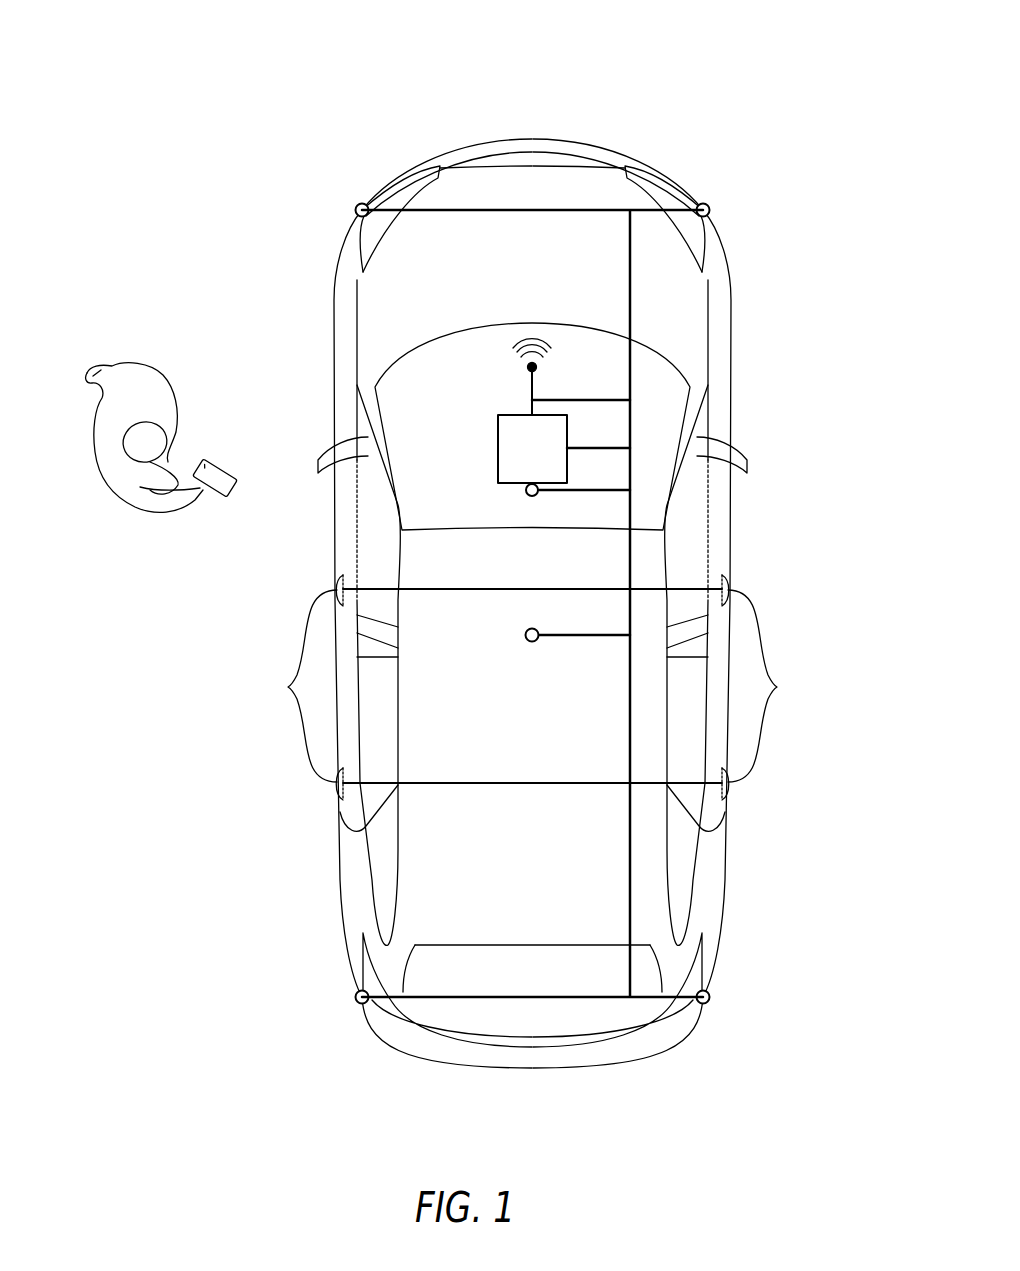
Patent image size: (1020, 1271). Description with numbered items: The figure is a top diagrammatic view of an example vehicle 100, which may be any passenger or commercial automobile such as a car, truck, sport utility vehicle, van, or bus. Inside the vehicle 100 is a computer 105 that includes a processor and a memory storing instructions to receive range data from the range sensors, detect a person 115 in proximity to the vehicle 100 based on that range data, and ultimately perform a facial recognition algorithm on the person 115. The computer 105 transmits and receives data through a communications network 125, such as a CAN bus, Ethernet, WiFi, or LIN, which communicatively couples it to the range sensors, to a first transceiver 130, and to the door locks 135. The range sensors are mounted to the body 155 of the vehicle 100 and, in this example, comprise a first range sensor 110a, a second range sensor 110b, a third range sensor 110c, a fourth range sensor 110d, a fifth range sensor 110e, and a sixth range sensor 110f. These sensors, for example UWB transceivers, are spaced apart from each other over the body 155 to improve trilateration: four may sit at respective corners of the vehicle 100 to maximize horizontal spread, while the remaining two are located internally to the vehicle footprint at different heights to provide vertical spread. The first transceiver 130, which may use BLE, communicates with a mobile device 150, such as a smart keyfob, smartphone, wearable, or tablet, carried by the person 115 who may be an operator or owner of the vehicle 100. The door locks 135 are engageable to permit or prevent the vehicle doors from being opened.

The vehicle 100 is at (803, 78).
The computer 105 is at (496, 437).
The first range sensor 110a is at (355, 208).
The second range sensor 110b is at (526, 492).
The third range sensor 110c is at (710, 208).
The fourth range sensor 110d is at (355, 999).
The fifth range sensor 110e is at (526, 637).
The sixth range sensor 110f is at (710, 999).
The person 115 is at (148, 365).
The communications network 125 is at (628, 285).
The first transceiver 130 is at (530, 388).
The door locks 135 is at (532, 686).
The mobile device 150 is at (207, 466).
The body 155 is at (333, 301).